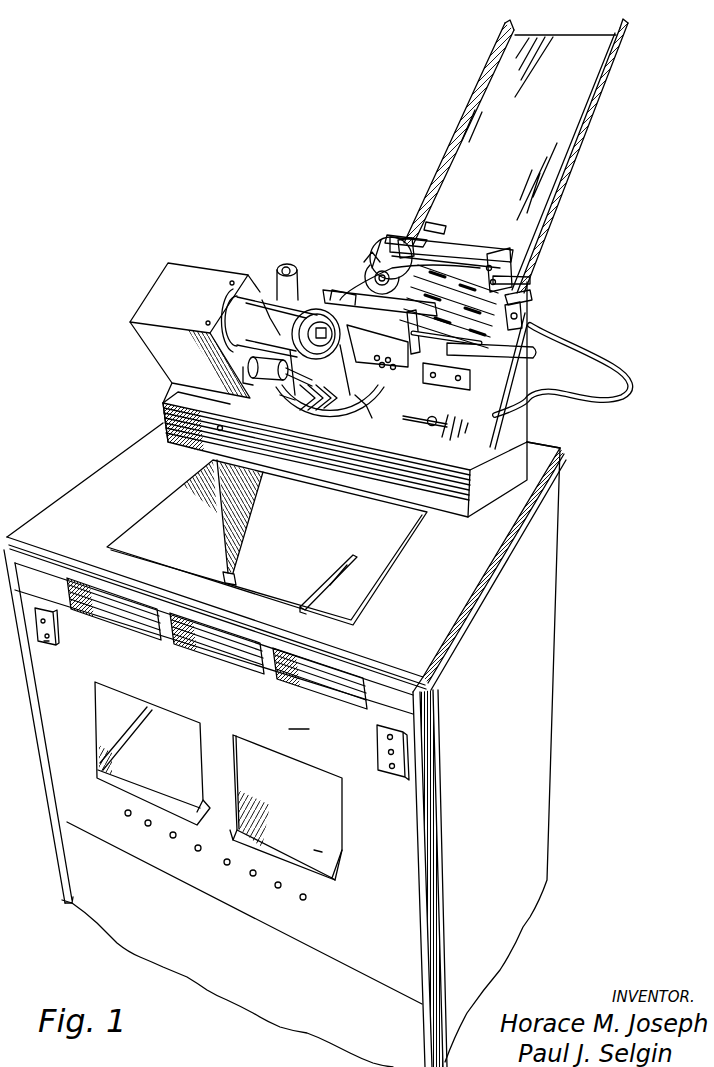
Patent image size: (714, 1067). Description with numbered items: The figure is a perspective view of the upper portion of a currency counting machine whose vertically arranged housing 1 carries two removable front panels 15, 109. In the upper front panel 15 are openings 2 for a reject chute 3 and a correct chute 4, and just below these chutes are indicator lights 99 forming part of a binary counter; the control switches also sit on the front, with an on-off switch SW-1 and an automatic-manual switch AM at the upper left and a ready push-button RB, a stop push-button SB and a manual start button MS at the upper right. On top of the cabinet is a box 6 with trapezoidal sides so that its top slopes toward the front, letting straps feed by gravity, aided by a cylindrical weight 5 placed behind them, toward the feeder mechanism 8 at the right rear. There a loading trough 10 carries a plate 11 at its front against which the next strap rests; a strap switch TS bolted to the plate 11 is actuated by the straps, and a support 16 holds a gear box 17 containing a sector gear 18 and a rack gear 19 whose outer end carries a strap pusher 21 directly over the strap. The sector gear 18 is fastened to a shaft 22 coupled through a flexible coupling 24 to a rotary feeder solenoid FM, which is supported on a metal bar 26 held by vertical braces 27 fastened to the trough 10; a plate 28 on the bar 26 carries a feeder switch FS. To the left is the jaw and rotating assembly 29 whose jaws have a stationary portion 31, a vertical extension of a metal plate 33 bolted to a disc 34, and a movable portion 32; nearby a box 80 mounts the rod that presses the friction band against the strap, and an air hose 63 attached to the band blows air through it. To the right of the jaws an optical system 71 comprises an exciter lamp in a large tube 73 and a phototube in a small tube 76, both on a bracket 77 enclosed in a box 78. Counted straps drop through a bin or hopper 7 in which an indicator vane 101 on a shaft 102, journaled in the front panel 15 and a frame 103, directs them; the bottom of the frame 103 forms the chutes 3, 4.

The housing 1 is at (572, 517).
The openings 2 is at (236, 731).
The reject chute 3 is at (140, 739).
The correct chute 4 is at (318, 858).
The cylindrical weight 5 is at (464, 241).
The box 6 is at (165, 425).
The bin or hopper 7 is at (366, 578).
The feeder mechanism 8 is at (540, 294).
The loading trough 10 is at (571, 138).
The plate 11 is at (494, 430).
The front panel 15 is at (309, 728).
The support 16 is at (385, 376).
The gear box 17 is at (346, 300).
The sector gear 18 is at (383, 250).
The rack gear 19 is at (516, 318).
The strap pusher 21 is at (533, 352).
The shaft 22 is at (368, 322).
The flexible coupling 24 is at (345, 300).
The metal bar 26 is at (482, 257).
The vertical braces 27 is at (511, 277).
The plate 28 is at (410, 235).
The jaw and rotating assembly 29 is at (288, 405).
The stationary portion 31 is at (266, 300).
The movable portion 32 is at (312, 312).
The metal plate 33 is at (298, 412).
The disc 34 is at (358, 410).
The air hose 63 is at (327, 312).
The optical system 71 is at (141, 337).
The large tube 73 is at (262, 305).
The small tube 76 is at (262, 386).
The bracket 77 is at (372, 252).
The box 78 is at (176, 292).
The box 80 is at (296, 300).
The indicator lights 99 is at (122, 808).
The indicator vane 101 is at (340, 565).
The shaft 102 is at (328, 579).
The frame 103 is at (175, 519).
The front panel 109 is at (78, 890).
The rotary feeder solenoid FM is at (386, 252).
The feeder switch FS is at (425, 234).
The strap switch TS is at (436, 388).
The on-off switch SW-1 is at (52, 622).
The automatic-manual switch AM is at (49, 641).
The ready push-button RB is at (387, 737).
The stop push-button SB is at (388, 752).
The manual start button MS is at (390, 766).